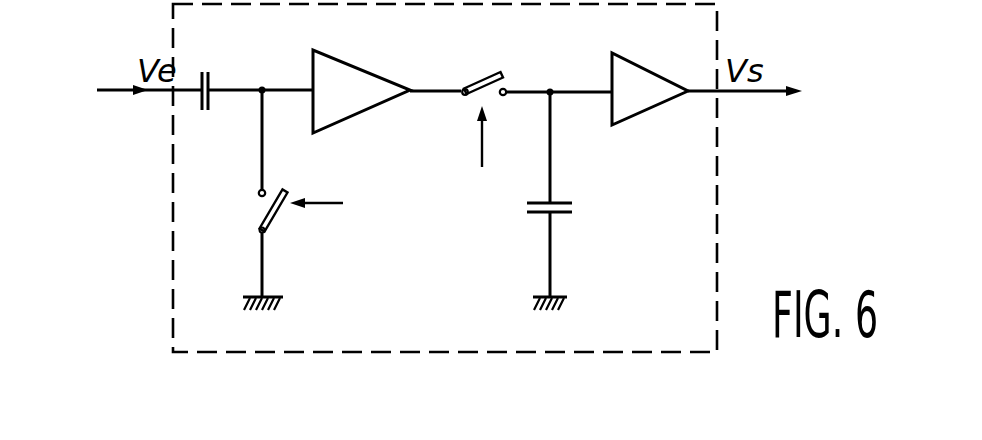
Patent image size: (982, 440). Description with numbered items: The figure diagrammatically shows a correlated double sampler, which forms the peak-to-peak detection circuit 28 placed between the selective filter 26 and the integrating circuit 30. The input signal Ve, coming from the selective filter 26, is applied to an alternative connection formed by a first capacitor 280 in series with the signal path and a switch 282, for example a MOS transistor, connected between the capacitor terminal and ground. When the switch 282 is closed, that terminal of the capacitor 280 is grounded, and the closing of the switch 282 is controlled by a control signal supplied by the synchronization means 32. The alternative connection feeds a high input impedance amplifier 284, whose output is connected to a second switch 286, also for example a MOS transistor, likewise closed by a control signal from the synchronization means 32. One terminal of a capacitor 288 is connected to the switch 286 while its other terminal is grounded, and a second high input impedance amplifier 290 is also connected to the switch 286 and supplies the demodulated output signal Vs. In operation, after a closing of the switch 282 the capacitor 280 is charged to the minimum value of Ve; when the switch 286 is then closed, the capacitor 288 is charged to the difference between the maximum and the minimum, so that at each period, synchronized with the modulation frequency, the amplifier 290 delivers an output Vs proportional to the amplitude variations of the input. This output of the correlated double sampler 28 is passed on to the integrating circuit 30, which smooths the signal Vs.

The peak-to-peak detection circuit 28 is at (173, 300).
The selective filter 26 is at (120, 89).
The integrating circuit 30 is at (779, 90).
The synchronization means 32 is at (402, 162).
The first capacitor 280 is at (200, 102).
The switch 282 is at (268, 213).
The high input impedance amplifier 284 is at (370, 88).
The switch 286 is at (483, 78).
The capacitor 288 is at (557, 215).
The high input impedance amplifier 290 is at (665, 97).